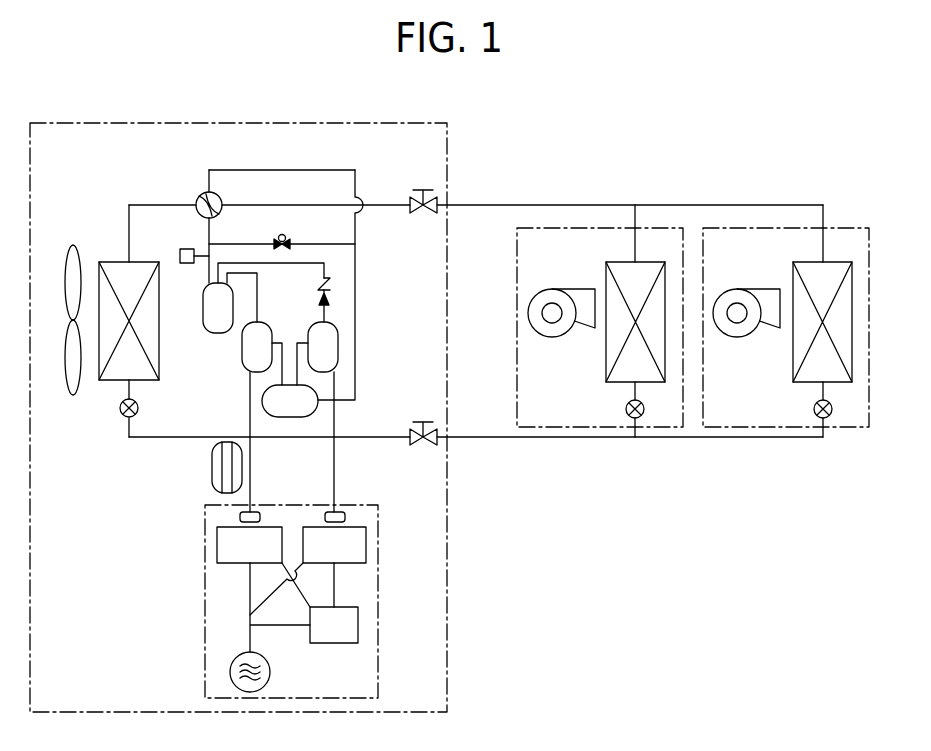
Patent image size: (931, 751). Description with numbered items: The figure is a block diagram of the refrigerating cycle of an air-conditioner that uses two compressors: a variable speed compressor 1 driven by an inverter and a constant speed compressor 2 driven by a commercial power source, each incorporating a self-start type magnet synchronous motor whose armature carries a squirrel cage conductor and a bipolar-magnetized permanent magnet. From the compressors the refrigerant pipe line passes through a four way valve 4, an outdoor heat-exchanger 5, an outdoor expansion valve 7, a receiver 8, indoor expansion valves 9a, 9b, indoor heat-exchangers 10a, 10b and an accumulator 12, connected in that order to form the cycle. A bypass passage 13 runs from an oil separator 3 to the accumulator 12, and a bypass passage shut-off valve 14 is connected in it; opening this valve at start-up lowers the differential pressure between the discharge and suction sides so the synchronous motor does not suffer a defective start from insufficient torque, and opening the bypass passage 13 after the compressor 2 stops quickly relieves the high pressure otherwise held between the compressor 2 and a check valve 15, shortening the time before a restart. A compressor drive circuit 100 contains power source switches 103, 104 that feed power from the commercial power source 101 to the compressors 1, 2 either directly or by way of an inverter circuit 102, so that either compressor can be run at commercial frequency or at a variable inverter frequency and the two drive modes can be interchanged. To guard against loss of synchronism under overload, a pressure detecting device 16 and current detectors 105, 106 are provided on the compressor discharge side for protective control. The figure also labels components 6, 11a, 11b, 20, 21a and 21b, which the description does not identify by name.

The variable speed compressor 1 is at (248, 360).
The constant speed compressor 2 is at (330, 345).
The oil separator 3 is at (207, 318).
The four way valve 4 is at (200, 195).
The outdoor heat-exchanger 5 is at (116, 262).
The outdoor fan 6 is at (68, 257).
The outdoor expansion valve 7 is at (120, 412).
The receiver 8 is at (212, 470).
The indoor expansion valve 9a is at (626, 409).
The indoor expansion valve 9b is at (814, 409).
The indoor heat-exchanger 10a is at (606, 348).
The indoor heat-exchanger 10b is at (793, 348).
The indoor fan 11a is at (582, 297).
The indoor fan 11b is at (767, 297).
The accumulator 12 is at (305, 408).
The bypass passage 13 is at (240, 244).
The bypass passage shut-off valve 14 is at (288, 238).
The check valve 15 is at (330, 285).
The pressure detecting device 16 is at (180, 252).
The outdoor unit 20 is at (447, 455).
The indoor unit 21a is at (582, 228).
The indoor unit 21b is at (768, 228).
The compressor drive circuit 100 is at (205, 685).
The commercial power source 101 is at (230, 672).
The inverter circuit 102 is at (358, 625).
The power source switch 103 is at (217, 545).
The power source switch 104 is at (366, 545).
The current detector 105 is at (240, 517).
The current detector 106 is at (345, 517).